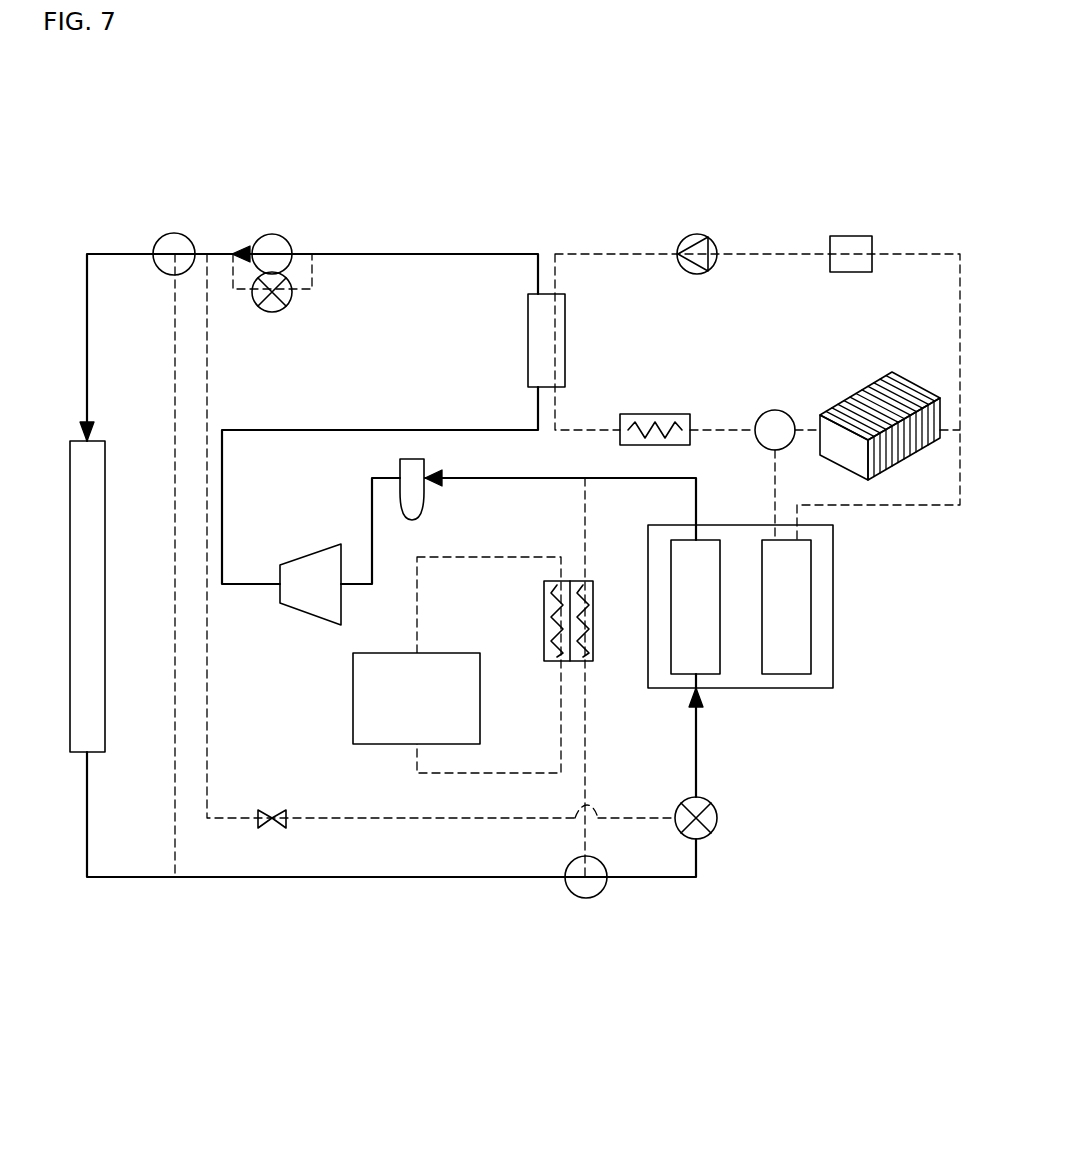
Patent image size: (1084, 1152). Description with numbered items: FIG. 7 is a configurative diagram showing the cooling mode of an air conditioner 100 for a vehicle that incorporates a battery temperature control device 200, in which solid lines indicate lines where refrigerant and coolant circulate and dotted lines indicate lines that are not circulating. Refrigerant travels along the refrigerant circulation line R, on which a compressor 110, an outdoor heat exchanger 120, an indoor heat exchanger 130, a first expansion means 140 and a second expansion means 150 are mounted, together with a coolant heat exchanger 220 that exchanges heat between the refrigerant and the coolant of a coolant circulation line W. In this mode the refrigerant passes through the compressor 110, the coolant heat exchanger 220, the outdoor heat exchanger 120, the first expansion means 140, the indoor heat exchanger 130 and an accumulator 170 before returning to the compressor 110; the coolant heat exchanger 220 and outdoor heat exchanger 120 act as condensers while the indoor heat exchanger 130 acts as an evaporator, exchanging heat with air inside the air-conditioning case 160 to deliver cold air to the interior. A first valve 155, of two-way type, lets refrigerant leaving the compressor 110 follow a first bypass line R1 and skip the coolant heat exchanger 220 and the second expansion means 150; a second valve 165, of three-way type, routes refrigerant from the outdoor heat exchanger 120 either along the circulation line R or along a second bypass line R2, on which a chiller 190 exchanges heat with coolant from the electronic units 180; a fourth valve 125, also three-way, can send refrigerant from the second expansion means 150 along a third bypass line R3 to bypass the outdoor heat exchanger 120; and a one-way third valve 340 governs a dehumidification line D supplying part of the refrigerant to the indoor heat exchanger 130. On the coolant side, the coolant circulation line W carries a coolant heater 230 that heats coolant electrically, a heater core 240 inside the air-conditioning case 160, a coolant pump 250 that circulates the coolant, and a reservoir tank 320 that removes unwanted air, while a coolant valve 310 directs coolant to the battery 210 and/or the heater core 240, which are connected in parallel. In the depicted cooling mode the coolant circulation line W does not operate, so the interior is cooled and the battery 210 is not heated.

The air conditioner for a vehicle 100 is at (422, 213).
The compressor 110 is at (309, 617).
The outdoor heat exchanger 120 is at (98, 755).
The fourth valve 125 is at (176, 233).
The indoor heat exchanger 130 is at (712, 676).
The first expansion means 140 is at (718, 820).
The second expansion means 150 is at (280, 312).
The first valve 155 is at (272, 233).
The air-conditioning case 160 is at (834, 610).
The second valve 165 is at (586, 899).
The accumulator 170 is at (426, 511).
The electronic units 180 is at (353, 720).
The chiller 190 is at (542, 622).
The battery temperature control device 200 is at (799, 181).
The battery 210 is at (858, 395).
The coolant heat exchanger 220 is at (528, 343).
The coolant heater 230 is at (660, 413).
The heater core 240 is at (798, 676).
The coolant pump 250 is at (706, 236).
The coolant valve 310 is at (776, 411).
The reservoir tank 320 is at (856, 236).
The third valve 340 is at (272, 809).
The refrigerant circulation line R is at (320, 880).
The first bypass line R1 is at (296, 252).
The second bypass line R2 is at (590, 528).
The third bypass line R3 is at (175, 360).
The dehumidification line D is at (431, 822).
The coolant circulation line W is at (960, 337).